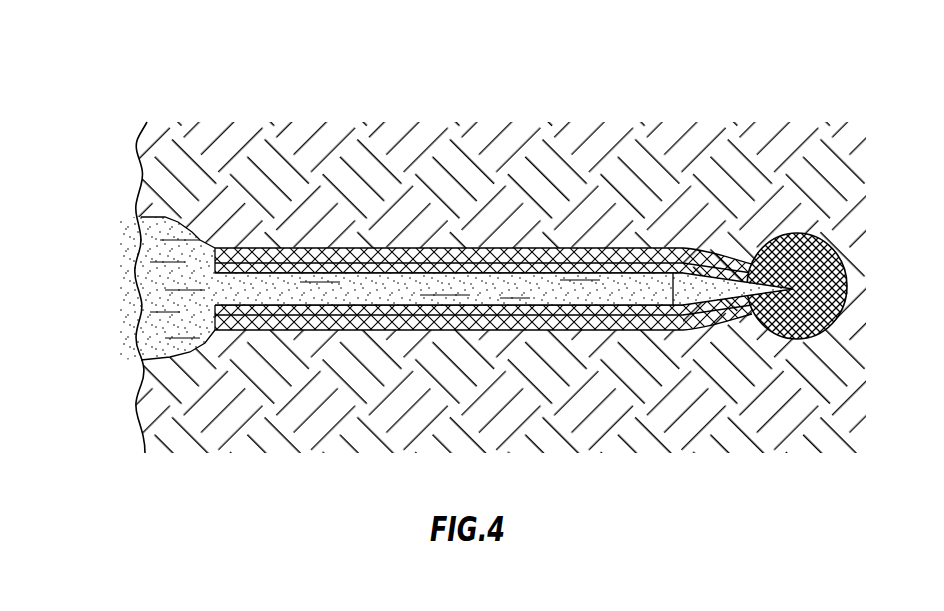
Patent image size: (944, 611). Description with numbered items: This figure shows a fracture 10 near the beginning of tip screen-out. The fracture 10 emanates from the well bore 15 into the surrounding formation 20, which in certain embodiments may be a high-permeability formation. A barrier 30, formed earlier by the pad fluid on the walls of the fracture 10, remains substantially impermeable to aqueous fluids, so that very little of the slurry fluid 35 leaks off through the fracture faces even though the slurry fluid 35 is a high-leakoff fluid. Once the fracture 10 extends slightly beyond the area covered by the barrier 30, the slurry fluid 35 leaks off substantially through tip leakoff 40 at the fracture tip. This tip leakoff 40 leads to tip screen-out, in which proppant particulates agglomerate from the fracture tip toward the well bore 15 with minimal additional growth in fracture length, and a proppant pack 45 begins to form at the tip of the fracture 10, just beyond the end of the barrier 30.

The fracture 10 is at (531, 294).
The well bore 15 is at (138, 281).
The formation 20 is at (733, 104).
The barrier 30 is at (487, 326).
The slurry fluid 35 is at (478, 285).
The tip leakoff 40 is at (800, 325).
The proppant pack 45 is at (700, 268).